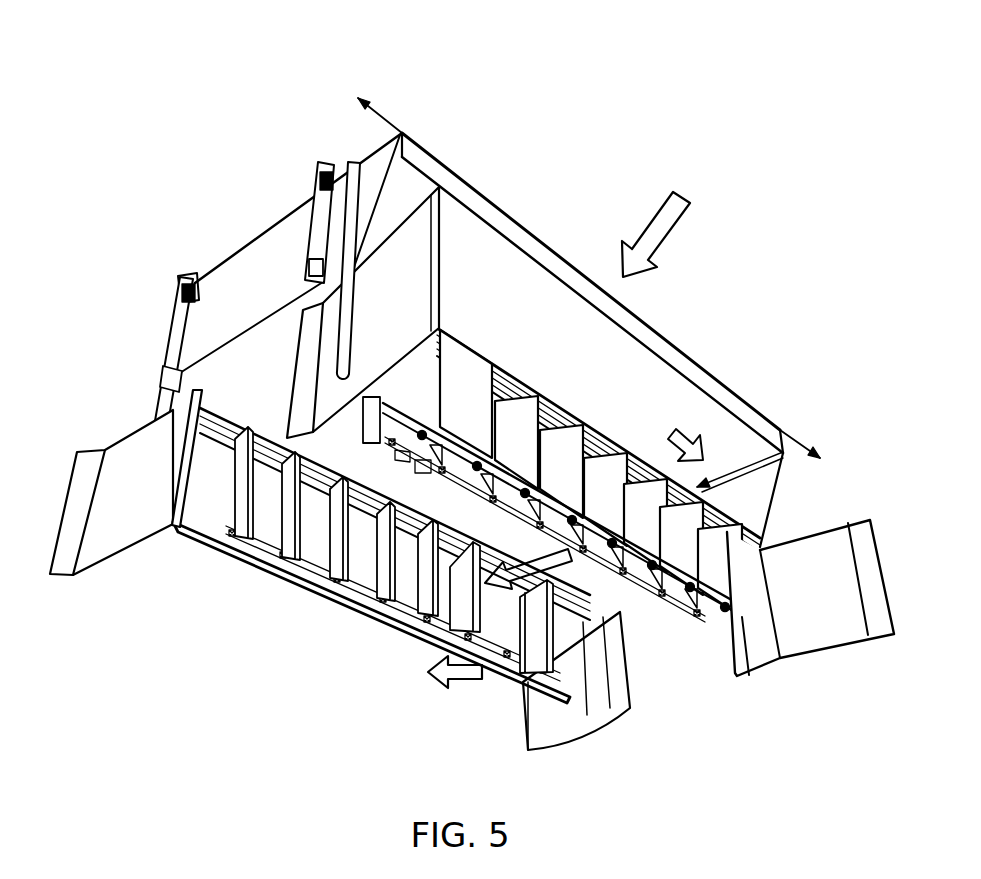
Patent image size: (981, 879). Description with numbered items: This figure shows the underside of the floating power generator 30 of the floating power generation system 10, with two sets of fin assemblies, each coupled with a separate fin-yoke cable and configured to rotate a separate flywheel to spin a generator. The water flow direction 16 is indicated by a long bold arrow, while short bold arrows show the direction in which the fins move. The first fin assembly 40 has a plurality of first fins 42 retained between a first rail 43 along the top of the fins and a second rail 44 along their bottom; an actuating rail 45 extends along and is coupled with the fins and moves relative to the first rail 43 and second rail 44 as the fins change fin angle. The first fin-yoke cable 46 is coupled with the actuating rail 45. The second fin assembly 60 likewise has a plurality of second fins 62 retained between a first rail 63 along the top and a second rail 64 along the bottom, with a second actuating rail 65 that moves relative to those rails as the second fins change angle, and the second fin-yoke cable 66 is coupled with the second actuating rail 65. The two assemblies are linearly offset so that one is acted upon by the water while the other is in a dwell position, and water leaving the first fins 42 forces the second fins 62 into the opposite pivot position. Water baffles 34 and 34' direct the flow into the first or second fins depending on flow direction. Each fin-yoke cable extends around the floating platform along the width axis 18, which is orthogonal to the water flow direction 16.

The floating power generation system 10 is at (240, 132).
The water flow direction 16 is at (648, 222).
The width axis 18 is at (372, 100).
The floating power generator 30 is at (437, 163).
The water baffle 34 is at (388, 312).
The water baffle 34' is at (810, 573).
The first fin assembly 40 is at (597, 455).
The first fins 42 is at (560, 418).
The first rail 43 is at (490, 365).
The second rail 44 is at (710, 617).
The actuating rail 45 is at (423, 470).
The first fin-yoke cable 46 is at (310, 197).
The second fin assembly 60 is at (335, 558).
The second fins 62 is at (363, 587).
The first rail 63 is at (322, 487).
The second rail 64 is at (208, 542).
The second actuating rail 65 is at (232, 422).
The second fin-yoke cable 66 is at (168, 300).